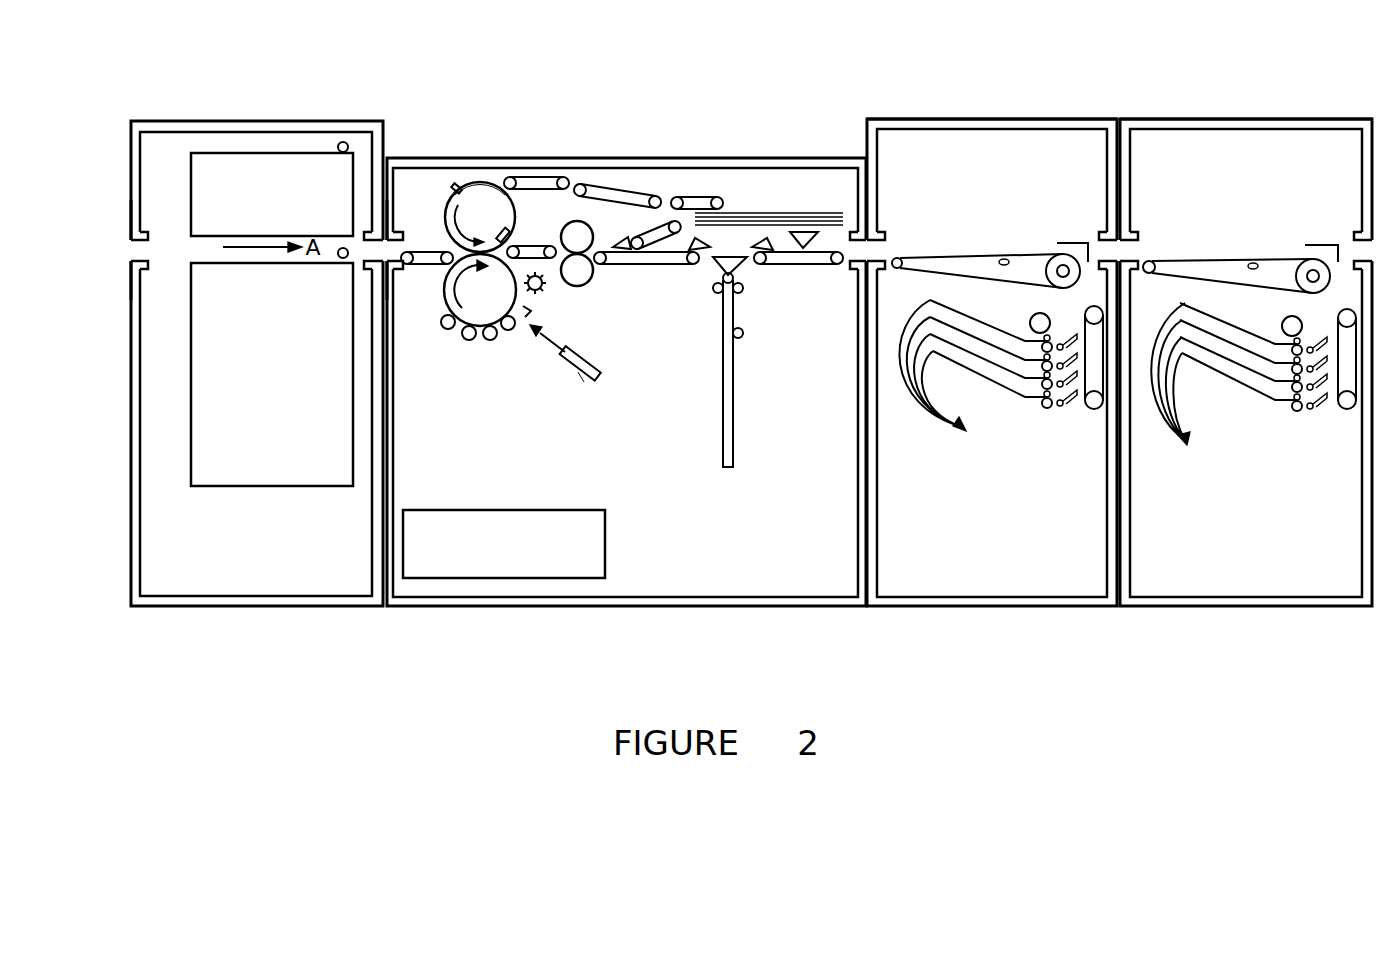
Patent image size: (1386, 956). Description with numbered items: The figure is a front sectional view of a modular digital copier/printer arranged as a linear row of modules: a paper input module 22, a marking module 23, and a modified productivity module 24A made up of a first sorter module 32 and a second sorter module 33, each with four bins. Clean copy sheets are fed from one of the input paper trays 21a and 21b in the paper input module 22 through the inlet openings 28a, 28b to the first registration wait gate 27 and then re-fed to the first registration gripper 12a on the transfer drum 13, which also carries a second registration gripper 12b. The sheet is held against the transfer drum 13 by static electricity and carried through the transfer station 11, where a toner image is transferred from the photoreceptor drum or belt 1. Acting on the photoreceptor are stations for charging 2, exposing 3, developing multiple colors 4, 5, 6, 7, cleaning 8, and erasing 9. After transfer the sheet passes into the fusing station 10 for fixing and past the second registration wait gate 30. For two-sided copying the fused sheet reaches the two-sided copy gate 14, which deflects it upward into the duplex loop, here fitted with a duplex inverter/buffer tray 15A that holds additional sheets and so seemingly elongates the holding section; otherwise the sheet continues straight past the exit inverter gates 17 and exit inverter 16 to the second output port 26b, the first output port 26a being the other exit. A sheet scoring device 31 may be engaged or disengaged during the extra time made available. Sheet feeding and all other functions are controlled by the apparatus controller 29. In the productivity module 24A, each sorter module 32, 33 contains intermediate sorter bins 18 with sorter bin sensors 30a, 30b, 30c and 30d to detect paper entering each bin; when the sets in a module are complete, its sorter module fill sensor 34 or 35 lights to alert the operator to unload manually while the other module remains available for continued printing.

The photoreceptor drum or belt 1 is at (474, 305).
The charging station 2 is at (532, 316).
The exposing station 3 is at (578, 373).
The developing station 4 is at (510, 336).
The developing station 5 is at (489, 346).
The developing station 6 is at (464, 345).
The developing station 7 is at (441, 332).
The cleaning station 8 is at (547, 285).
The erasing station 9 is at (545, 305).
The fusing station 10 is at (582, 226).
The transfer station 11 is at (490, 184).
The first registration gripper 12a is at (510, 221).
The second registration gripper 12b is at (457, 188).
The transfer drum 13 is at (463, 227).
The two-sided copy gate 14 is at (616, 238).
The duplex inverter/buffer tray 15A is at (790, 212).
The exit inverter 16 is at (736, 432).
The exit inverter gate 17 is at (686, 247).
The intermediate sorter bins 18 is at (1057, 387).
The input paper tray 21a is at (302, 201).
The input paper tray 21b is at (291, 394).
The paper input module 22 is at (217, 607).
The marking module 23 is at (625, 608).
The modified productivity module 24A is at (1145, 118).
The first output port 26a is at (340, 258).
The second output port 26b is at (839, 265).
The first registration wait gate 27 is at (404, 263).
The sheet inlet 28a is at (133, 249).
The sheet inlet 28b is at (398, 246).
The apparatus controller 29 is at (489, 557).
The second registration wait gate 30 is at (508, 178).
The sorter bin sensor 30a is at (1047, 398).
The sorter bin sensor 30b is at (1047, 380).
The sorter bin sensor 30c is at (1047, 362).
The sorter bin sensor 30d is at (1047, 343).
The sheet scoring device 31 is at (808, 232).
The first sorter module 32 is at (1010, 608).
The second sorter module 33 is at (1248, 608).
The sorter module fill sensor 34 is at (1037, 312).
The sorter module fill sensor 35 is at (1285, 318).